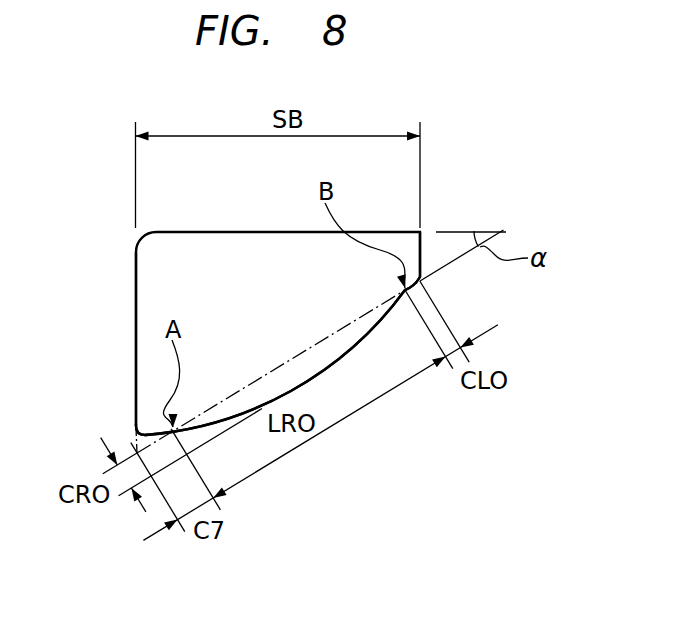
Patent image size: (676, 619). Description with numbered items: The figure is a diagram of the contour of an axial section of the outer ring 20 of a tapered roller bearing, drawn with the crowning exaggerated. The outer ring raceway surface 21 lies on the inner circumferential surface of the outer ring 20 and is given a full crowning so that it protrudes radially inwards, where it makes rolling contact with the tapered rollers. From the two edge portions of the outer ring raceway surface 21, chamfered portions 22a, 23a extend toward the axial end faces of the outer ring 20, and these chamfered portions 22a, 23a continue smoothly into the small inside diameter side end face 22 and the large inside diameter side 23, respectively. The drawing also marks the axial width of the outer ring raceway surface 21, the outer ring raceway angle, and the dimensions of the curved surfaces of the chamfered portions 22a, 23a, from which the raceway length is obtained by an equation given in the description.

The outer ring 20 is at (447, 167).
The outer ring raceway surface 21 is at (353, 337).
The small inside diameter side end face 22 is at (135, 343).
The chamfered portion 22a is at (140, 433).
The large inside diameter side 23 is at (422, 247).
The chamfered portion 23a is at (419, 288).